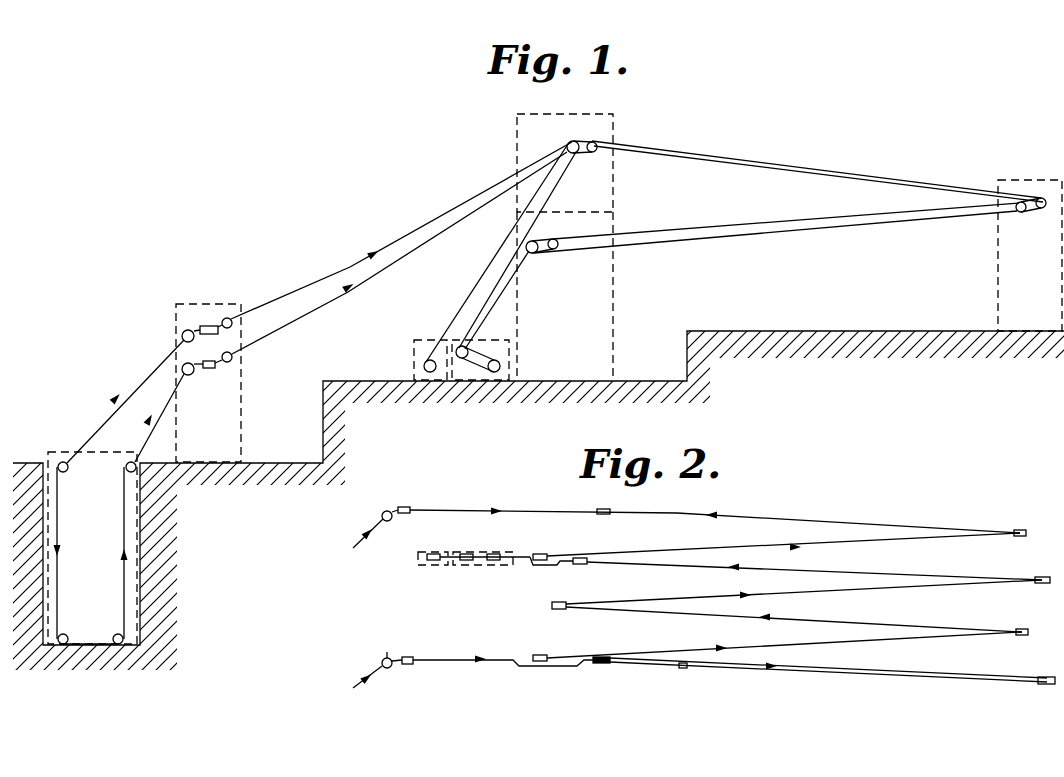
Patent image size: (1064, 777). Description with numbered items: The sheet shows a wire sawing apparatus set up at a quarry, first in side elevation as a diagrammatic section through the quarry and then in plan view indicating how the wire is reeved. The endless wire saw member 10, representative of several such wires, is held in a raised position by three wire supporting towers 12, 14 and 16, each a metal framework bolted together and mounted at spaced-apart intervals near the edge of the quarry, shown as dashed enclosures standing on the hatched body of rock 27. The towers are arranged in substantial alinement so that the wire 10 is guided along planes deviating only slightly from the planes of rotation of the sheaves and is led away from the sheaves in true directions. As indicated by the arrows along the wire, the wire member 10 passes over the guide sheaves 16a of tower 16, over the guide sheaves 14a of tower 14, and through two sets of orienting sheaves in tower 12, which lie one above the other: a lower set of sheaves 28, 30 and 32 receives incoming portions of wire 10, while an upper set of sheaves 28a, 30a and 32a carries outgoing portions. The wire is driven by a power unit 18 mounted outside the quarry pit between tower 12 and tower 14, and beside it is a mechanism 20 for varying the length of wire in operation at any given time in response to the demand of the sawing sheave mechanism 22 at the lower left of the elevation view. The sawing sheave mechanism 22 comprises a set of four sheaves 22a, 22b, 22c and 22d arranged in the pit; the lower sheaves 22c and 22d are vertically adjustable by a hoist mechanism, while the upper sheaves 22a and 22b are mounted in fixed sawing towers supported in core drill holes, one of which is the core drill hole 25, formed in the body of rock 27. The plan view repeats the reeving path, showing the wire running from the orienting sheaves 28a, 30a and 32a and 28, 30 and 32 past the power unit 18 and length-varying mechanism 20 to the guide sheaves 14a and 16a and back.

In FIG. 1, the endless wire saw member 10 is at (97, 417).
In FIG. 1, the wire supporting tower 12 is at (202, 363).
In FIG. 1, the wire supporting tower 14 is at (575, 232).
In FIG. 1, the guide sheaves 14a is at (577, 156).
In FIG. 2, the guide sheaves 14a is at (601, 663).
In FIG. 1, the wire supporting tower 16 is at (1030, 239).
In FIG. 1, the guide sheaves 16a is at (1023, 213).
In FIG. 2, the guide sheaves 16a is at (1020, 528).
In FIG. 1, the power unit 18 is at (414, 355).
In FIG. 2, the power unit 18 is at (418, 563).
In FIG. 1, the wire length varying mechanism 20 is at (490, 340).
In FIG. 2, the wire length varying mechanism 20 is at (487, 551).
In FIG. 1, the sawing sheave mechanism 22 is at (124, 528).
In FIG. 1, the sawing sheave 22a is at (68, 472).
In FIG. 1, the sawing sheave 22b is at (170, 488).
In FIG. 1, the sawing sheave 22c is at (66, 635).
In FIG. 1, the sawing sheave 22d is at (123, 641).
In FIG. 1, the core drill hole 25 is at (142, 567).
In FIG. 1, the body of rock 27 is at (27, 463).
In FIG. 1, the orienting sheave 28 is at (235, 358).
In FIG. 2, the orienting sheave 28 is at (408, 664).
In FIG. 1, the orienting sheave 28a is at (232, 320).
In FIG. 2, the orienting sheave 28a is at (405, 507).
In FIG. 1, the orienting sheave 30 is at (211, 368).
In FIG. 2, the orienting sheave 30 is at (387, 658).
In FIG. 1, the orienting sheave 30a is at (206, 325).
In FIG. 2, the orienting sheave 30a is at (391, 518).
In FIG. 1, the orienting sheave 32 is at (189, 376).
In FIG. 2, the orienting sheave 32 is at (364, 674).
In FIG. 1, the orienting sheave 32a is at (181, 336).
In FIG. 2, the orienting sheave 32a is at (371, 525).